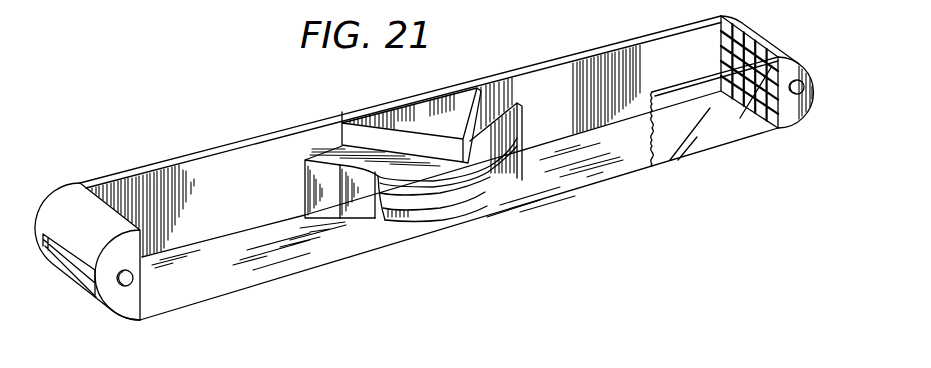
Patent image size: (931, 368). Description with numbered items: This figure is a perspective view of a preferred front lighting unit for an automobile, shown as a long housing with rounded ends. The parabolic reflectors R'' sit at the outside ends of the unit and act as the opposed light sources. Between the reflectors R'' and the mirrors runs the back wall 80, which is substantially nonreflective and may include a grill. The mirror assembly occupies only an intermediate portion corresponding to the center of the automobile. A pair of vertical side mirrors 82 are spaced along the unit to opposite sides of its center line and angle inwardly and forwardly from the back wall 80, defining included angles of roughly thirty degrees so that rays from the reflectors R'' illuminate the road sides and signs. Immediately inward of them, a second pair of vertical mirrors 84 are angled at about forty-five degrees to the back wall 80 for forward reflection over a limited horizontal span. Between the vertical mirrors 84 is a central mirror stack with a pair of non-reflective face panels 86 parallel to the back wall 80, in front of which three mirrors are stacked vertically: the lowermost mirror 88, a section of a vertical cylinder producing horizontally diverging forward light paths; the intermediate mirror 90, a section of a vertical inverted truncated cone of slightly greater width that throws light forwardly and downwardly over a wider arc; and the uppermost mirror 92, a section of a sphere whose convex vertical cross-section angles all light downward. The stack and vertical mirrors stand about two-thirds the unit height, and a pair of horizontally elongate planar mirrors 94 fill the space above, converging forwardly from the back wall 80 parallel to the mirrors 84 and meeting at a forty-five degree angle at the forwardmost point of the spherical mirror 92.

The back wall 80 is at (637, 50).
The vertical side mirrors 82 is at (312, 180).
The second pair of vertical mirrors 84 is at (361, 207).
The non-reflective face panels 86 is at (380, 206).
The lowermost mirror 88 is at (476, 193).
The intermediate mirror 90 is at (481, 188).
The uppermost mirror 92 is at (448, 185).
The horizontally elongate planar mirrors 94 is at (374, 137).
The parabolic reflectors R'' is at (424, 191).